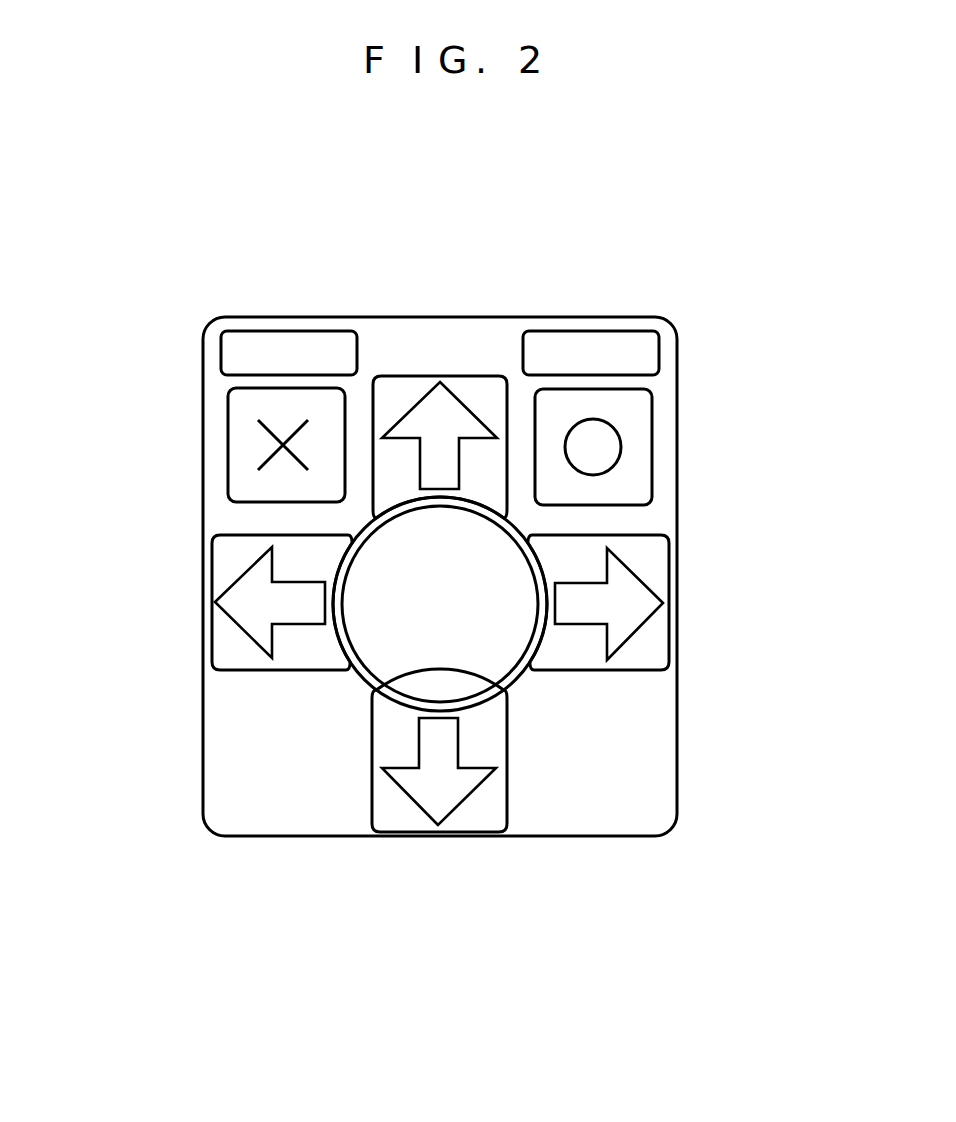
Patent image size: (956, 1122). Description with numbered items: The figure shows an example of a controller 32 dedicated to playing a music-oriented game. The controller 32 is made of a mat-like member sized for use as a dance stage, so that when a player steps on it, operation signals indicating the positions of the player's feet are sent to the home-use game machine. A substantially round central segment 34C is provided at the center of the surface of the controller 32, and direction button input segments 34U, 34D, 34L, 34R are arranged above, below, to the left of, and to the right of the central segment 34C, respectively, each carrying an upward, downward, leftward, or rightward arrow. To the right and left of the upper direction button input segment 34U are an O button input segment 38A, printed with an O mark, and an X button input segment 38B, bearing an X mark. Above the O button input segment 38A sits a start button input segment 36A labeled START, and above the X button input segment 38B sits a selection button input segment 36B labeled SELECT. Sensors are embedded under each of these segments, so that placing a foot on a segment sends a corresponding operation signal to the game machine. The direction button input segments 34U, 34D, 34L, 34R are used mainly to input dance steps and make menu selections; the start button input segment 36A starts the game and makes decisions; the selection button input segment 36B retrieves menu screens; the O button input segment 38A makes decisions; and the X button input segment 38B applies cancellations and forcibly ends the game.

The controller 32 is at (278, 838).
The direction button input segment 34U is at (440, 380).
The direction button input segment 34D is at (423, 833).
The direction button input segment 34L is at (213, 573).
The direction button input segment 34R is at (678, 575).
The central segment 34C is at (500, 677).
The start button input segment 36A is at (589, 331).
The selection button input segment 36B is at (291, 331).
The O button input segment 38A is at (652, 463).
The X button input segment 38B is at (228, 447).